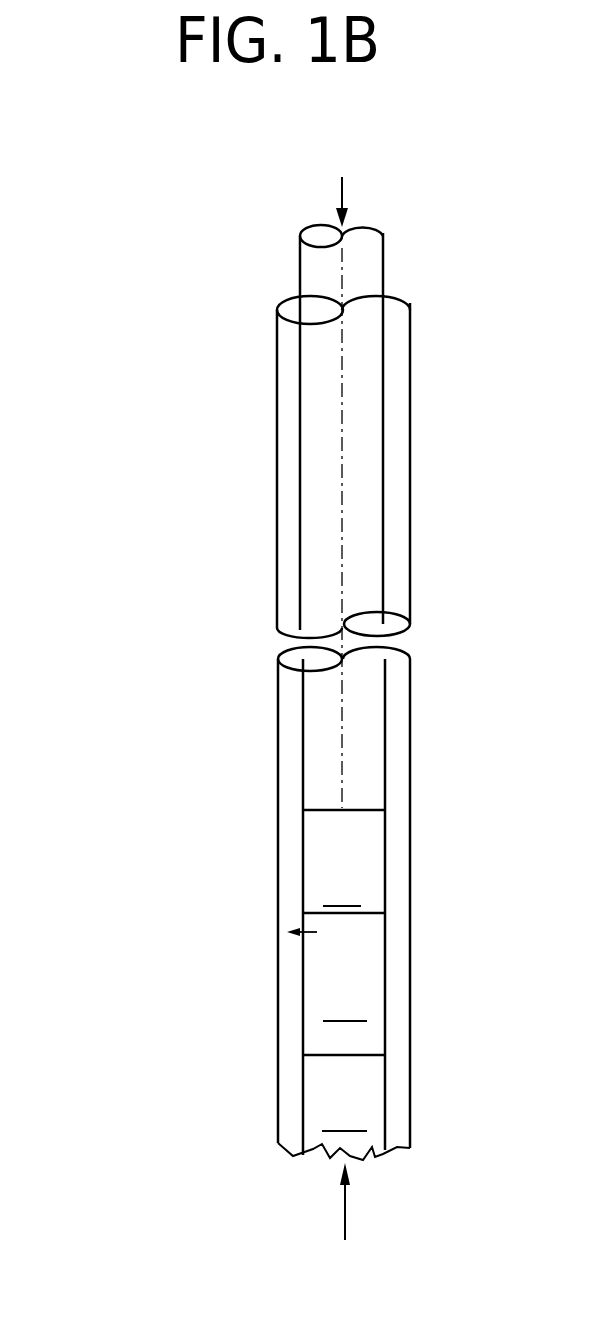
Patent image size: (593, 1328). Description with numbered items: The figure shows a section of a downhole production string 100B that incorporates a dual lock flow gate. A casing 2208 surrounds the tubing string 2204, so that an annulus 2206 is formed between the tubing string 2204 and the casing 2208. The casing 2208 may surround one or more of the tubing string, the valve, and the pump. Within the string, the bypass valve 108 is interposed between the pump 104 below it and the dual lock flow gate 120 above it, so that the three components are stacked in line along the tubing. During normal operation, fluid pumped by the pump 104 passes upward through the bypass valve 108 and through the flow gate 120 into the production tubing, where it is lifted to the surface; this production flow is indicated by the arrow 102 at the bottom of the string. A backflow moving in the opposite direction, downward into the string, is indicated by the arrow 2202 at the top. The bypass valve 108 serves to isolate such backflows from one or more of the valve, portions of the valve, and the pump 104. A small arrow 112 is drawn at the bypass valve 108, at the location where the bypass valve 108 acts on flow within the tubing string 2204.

The downhole production string 100B is at (178, 382).
The backflow arrow 2202 is at (344, 193).
The tubing string 2204 is at (300, 262).
The annulus 2206 is at (296, 300).
The casing 2208 is at (277, 357).
The dual lock flow gate 120 is at (344, 861).
The bypass valve 108 is at (293, 990).
The bypass flow 112 is at (292, 933).
The pump 104 is at (345, 1104).
The production flow arrow 102 is at (347, 1212).